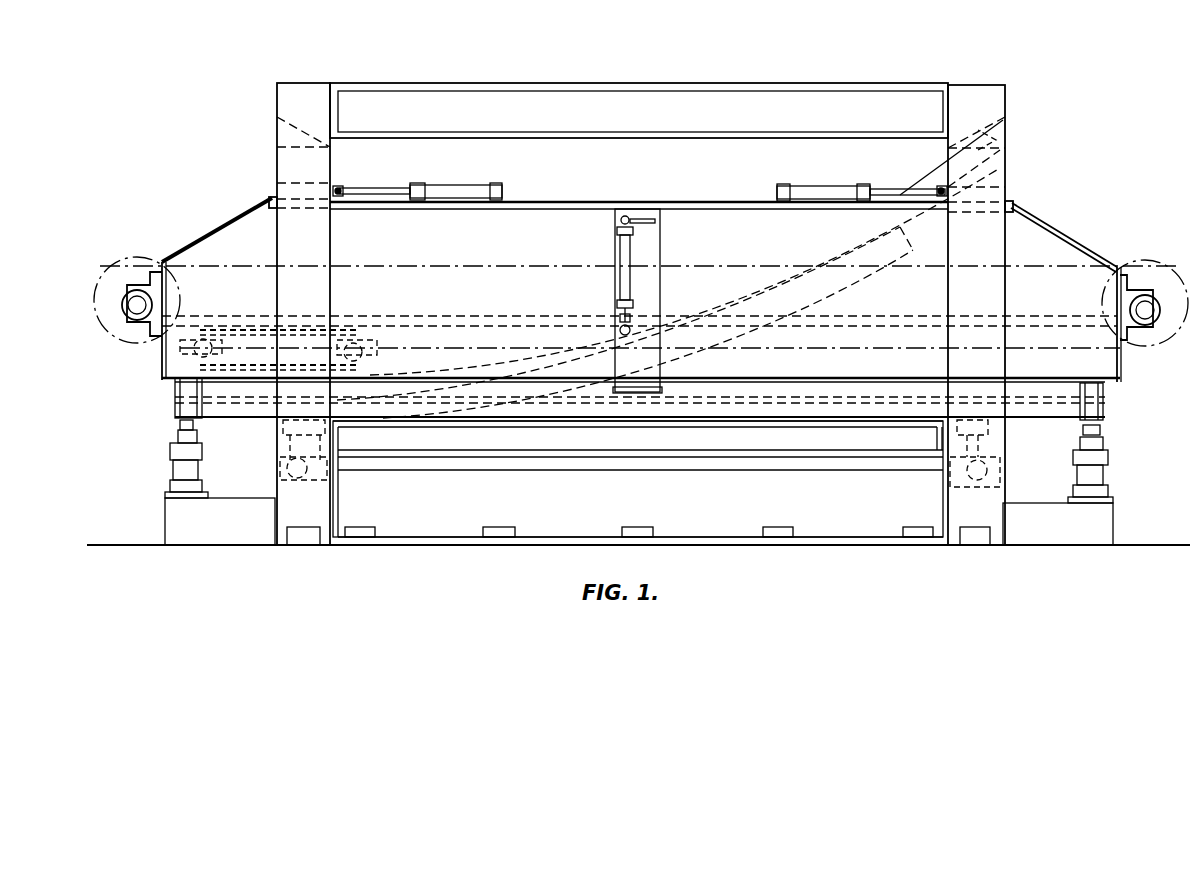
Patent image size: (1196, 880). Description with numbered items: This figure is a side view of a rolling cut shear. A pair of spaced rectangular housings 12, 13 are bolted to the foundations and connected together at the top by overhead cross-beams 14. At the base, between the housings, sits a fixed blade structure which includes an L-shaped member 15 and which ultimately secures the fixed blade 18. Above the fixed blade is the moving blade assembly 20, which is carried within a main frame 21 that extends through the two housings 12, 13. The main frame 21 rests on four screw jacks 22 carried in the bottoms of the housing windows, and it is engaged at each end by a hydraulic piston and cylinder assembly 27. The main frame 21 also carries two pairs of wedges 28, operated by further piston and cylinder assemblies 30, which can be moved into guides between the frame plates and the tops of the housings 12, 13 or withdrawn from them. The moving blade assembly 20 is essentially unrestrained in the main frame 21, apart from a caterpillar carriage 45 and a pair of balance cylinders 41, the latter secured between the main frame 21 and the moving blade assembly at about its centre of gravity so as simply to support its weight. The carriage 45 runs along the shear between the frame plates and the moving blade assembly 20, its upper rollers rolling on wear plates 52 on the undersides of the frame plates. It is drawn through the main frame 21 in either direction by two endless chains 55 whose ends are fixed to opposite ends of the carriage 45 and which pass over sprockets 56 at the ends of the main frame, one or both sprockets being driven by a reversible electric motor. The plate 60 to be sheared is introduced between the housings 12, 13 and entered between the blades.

The housing 12 is at (303, 92).
The housing 13 is at (978, 104).
The overhead cross-beam 14 is at (796, 84).
The L-shaped member 15 is at (887, 503).
The fixed blade 18 is at (853, 441).
The moving blade assembly 20 is at (812, 243).
The main frame 21 is at (1060, 222).
The screw jack 22 is at (310, 482).
The hydraulic piston and cylinder assembly 27 is at (176, 472).
The wedge 28 is at (277, 185).
The piston and cylinder assembly 30 is at (452, 186).
The balance cylinder 41 is at (613, 256).
The carriage 45 is at (160, 371).
The wear plate 52 is at (1055, 324).
The endless chain 55 is at (252, 264).
The sprocket 56 is at (132, 264).
The plate 60 is at (433, 428).